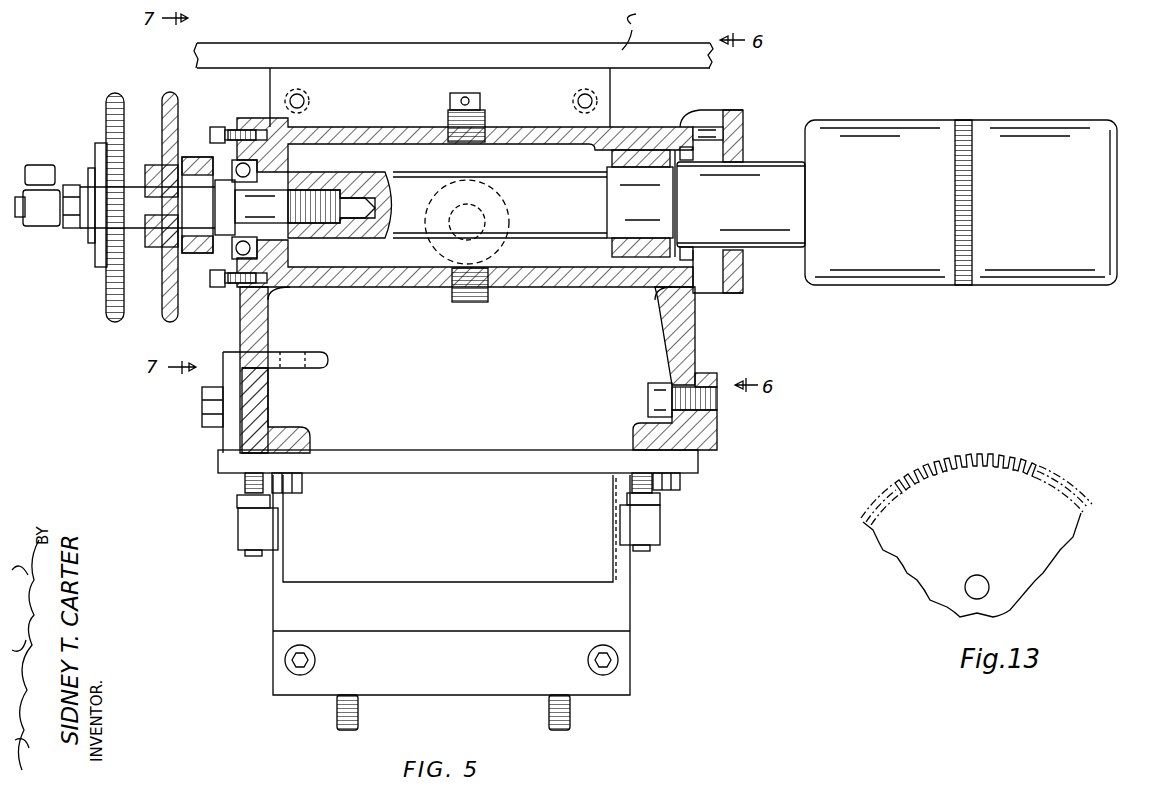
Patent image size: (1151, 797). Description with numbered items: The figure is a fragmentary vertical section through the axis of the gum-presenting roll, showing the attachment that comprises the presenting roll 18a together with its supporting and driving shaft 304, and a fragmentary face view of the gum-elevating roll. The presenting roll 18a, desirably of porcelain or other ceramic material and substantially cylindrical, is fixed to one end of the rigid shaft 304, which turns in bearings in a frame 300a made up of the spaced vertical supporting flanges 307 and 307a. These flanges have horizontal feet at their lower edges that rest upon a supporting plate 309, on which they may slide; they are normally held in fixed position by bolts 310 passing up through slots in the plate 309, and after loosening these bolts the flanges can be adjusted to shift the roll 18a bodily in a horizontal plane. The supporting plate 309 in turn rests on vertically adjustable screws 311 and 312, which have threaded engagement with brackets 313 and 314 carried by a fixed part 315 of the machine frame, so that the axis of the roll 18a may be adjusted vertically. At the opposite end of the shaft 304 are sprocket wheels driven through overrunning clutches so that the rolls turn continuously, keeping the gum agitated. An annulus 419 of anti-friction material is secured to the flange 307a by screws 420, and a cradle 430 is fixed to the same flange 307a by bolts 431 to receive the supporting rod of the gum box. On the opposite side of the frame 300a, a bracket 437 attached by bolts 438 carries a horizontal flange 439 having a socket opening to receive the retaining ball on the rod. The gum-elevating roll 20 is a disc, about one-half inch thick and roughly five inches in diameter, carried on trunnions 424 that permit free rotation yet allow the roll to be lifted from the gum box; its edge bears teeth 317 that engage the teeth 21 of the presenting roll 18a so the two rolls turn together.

In FIG. 5, the frame 300a is at (396, 275).
In FIG. 5, the vertical supporting flange 307 is at (248, 326).
In FIG. 5, the vertical supporting flange 307a is at (690, 342).
In FIG. 5, the cradle 430 is at (720, 430).
In FIG. 5, the bolts 431 is at (648, 390).
In FIG. 5, the annulus 419 is at (735, 285).
In FIG. 5, the screws 420 is at (735, 118).
In FIG. 5, the shaft 304 is at (753, 174).
In FIG. 5, the presenting roll 18a is at (1047, 120).
In FIG. 5, the teeth 21 is at (961, 119).
In FIG. 5, the bracket 437 is at (235, 418).
In FIG. 5, the horizontal flange 439 is at (322, 367).
In FIG. 5, the bolts 438 is at (205, 406).
In FIG. 5, the supporting plate 309 is at (478, 463).
In FIG. 5, the adjustable screw 311 is at (247, 485).
In FIG. 5, the bolts 310 is at (298, 488).
In FIG. 5, the adjustable screw 312 is at (632, 487).
In FIG. 5, the bracket 313 is at (243, 531).
In FIG. 5, the bracket 314 is at (655, 525).
In FIG. 5, the fixed part of machine frame 315 is at (284, 603).
In FIG. 13, the gum-elevating roll 20 is at (1039, 498).
In FIG. 13, the teeth 317 is at (985, 455).
In FIG. 13, the trunnion 424 is at (986, 577).